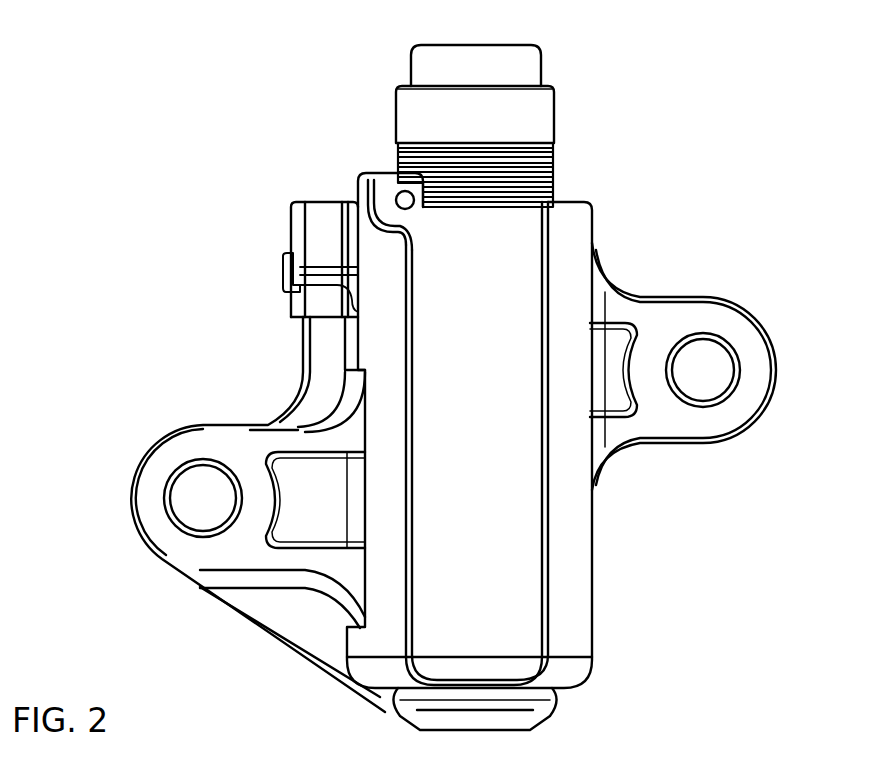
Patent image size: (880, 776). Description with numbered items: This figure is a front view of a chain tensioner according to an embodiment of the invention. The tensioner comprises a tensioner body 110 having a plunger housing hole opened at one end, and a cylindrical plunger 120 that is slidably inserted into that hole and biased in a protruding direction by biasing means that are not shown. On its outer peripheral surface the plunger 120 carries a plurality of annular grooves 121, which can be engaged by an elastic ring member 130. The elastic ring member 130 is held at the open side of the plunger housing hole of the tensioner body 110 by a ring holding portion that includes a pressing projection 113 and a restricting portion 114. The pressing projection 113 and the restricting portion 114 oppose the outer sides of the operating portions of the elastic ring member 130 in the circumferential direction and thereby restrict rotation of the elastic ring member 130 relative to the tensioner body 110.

The tensioner body 110 is at (595, 543).
The pressing projection 113 is at (303, 233).
The restricting portion 114 is at (375, 278).
The plunger 120 is at (396, 118).
The annular grooves 121 is at (553, 190).
The elastic ring member 130 is at (287, 267).